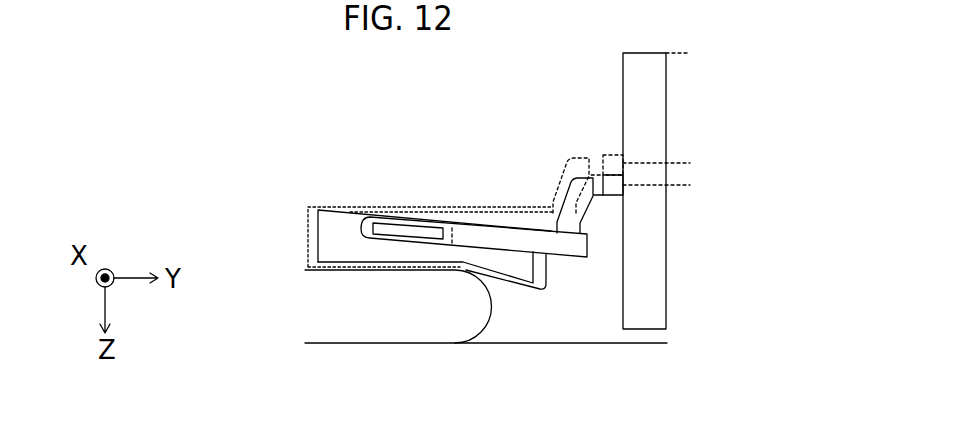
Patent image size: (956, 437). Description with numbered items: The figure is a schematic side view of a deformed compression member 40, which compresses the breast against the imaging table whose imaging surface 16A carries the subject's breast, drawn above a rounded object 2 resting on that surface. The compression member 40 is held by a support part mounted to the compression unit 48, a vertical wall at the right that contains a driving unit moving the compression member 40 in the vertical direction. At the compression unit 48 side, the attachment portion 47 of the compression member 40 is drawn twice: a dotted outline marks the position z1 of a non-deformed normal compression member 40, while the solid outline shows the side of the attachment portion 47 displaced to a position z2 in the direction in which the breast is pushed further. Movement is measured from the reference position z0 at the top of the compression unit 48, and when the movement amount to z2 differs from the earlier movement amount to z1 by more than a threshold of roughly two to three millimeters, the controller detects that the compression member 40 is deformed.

The recording medium / belt 2 is at (417, 332).
The imaging surface 16A is at (552, 343).
The compression member 40 is at (341, 184).
The attachment portion 47 is at (612, 155).
The compression unit 48 is at (623, 80).
The reference position z0 is at (692, 53).
The position of non-deformed normal compression member z1 is at (671, 162).
The position of deformed compression member z2 is at (671, 185).